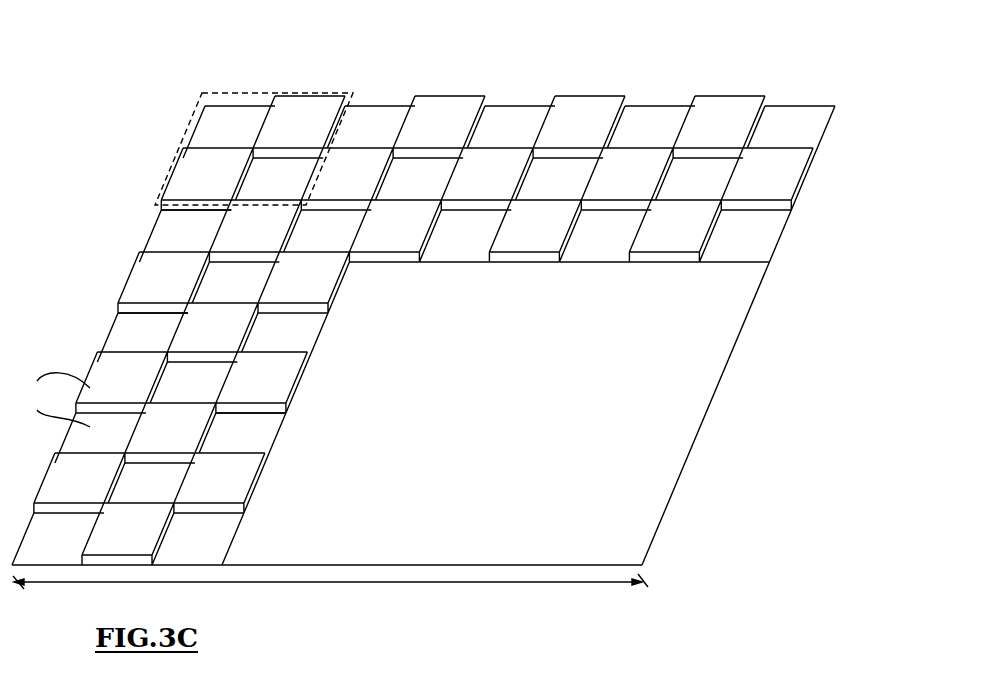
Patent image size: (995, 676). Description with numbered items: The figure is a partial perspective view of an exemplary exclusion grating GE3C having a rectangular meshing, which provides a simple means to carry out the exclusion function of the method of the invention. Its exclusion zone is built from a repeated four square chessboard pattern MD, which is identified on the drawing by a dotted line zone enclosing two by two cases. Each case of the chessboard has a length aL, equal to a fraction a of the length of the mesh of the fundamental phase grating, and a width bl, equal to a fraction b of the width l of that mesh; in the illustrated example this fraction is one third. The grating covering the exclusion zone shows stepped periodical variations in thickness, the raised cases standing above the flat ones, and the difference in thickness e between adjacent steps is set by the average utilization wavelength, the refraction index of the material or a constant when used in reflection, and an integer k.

The exclusion grating GE3C is at (640, 80).
The four square chessboard pattern MD is at (178, 148).
The difference in thickness e is at (100, 302).
The length of a square case aL is at (560, 278).
The width of a square case bl is at (313, 412).
The width of the mesh l is at (888, 110).